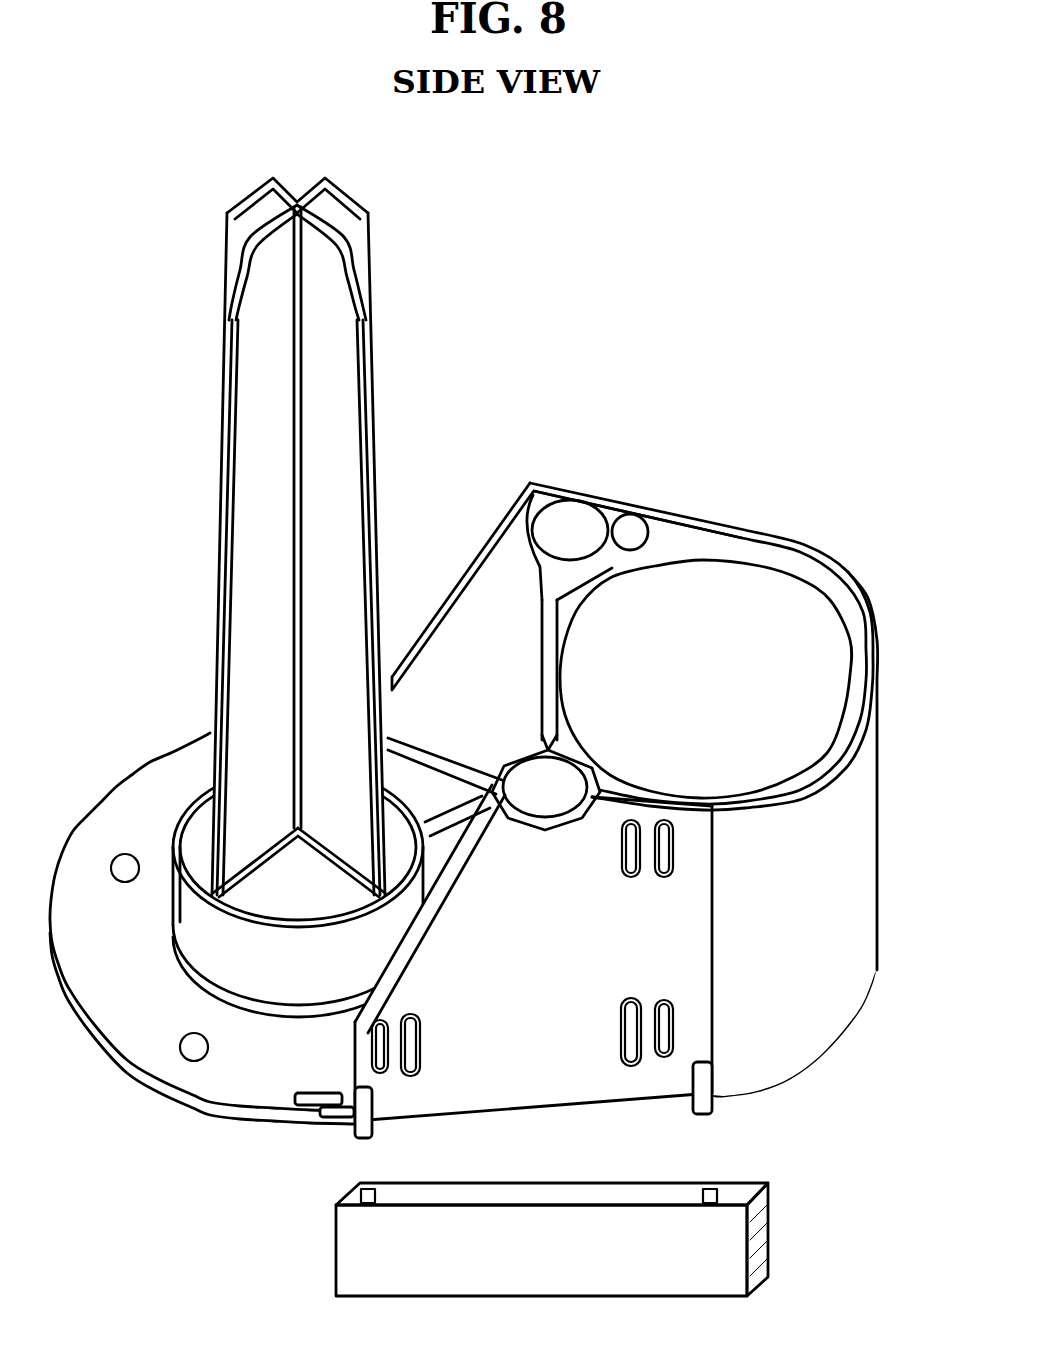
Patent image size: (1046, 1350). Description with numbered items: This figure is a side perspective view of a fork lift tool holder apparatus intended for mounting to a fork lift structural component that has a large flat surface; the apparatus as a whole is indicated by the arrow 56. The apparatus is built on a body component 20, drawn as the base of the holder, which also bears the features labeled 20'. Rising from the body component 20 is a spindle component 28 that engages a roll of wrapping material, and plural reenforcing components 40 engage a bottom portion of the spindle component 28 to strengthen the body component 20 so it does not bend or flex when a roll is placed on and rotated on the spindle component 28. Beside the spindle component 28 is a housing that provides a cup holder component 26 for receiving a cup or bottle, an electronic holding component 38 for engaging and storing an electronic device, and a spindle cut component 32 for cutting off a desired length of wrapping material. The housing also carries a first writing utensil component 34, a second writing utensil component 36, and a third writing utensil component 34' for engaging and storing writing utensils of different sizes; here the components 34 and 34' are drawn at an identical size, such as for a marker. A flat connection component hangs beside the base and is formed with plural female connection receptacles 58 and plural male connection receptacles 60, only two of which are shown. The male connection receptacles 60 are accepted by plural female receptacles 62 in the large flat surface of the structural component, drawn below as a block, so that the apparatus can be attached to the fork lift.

The assembly 56 is at (792, 112).
The body component 20 is at (462, 928).
The mounting holes 20' is at (168, 961).
The spindle component 28 is at (297, 198).
The electronic holding component 38 is at (692, 510).
The cup holder component 26 is at (692, 675).
The first writing utensil component 34 is at (570, 530).
The third writing utensil component 34' is at (546, 790).
The second writing utensil component 36 is at (636, 514).
The spindle cut component 32 is at (497, 545).
The reenforcing components 40 is at (430, 822).
The female connection receptacles 58 is at (405, 1017).
The male connection receptacles 60 is at (712, 1065).
The female receptacles 62 is at (368, 1188).